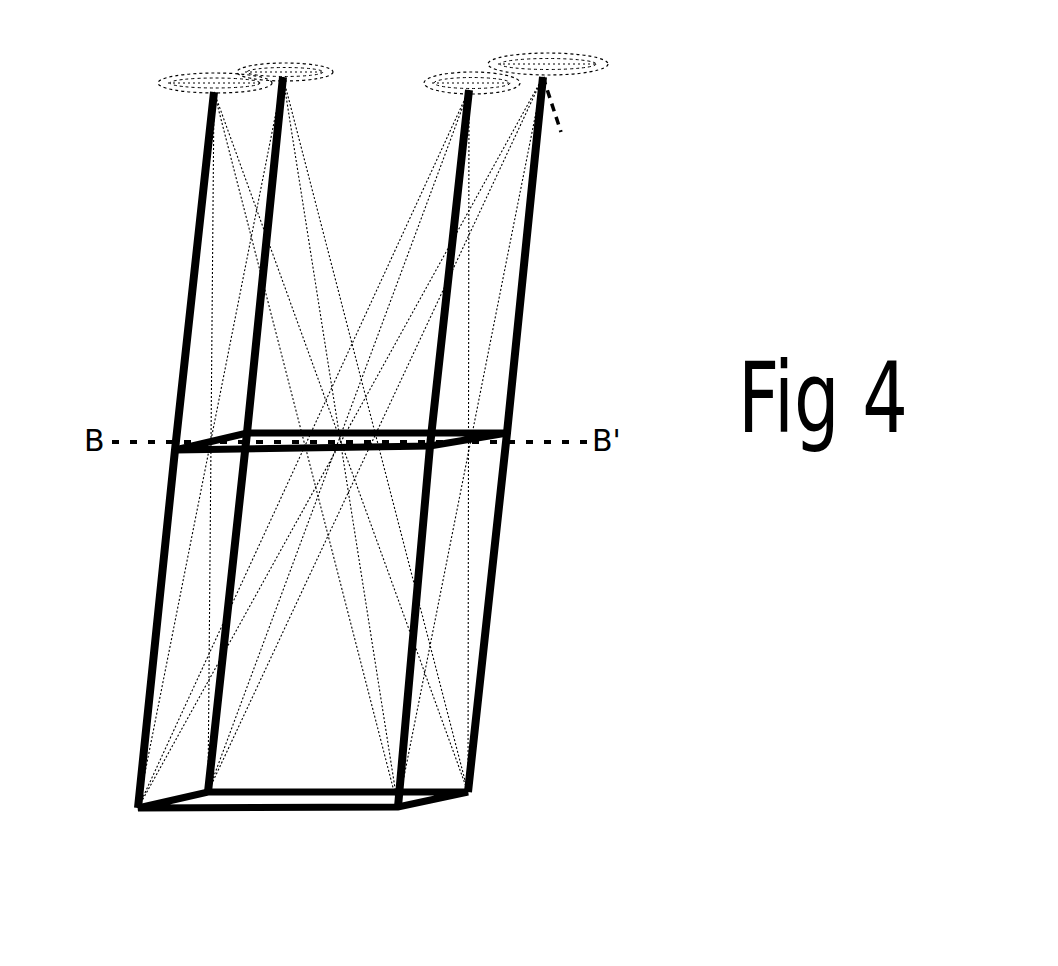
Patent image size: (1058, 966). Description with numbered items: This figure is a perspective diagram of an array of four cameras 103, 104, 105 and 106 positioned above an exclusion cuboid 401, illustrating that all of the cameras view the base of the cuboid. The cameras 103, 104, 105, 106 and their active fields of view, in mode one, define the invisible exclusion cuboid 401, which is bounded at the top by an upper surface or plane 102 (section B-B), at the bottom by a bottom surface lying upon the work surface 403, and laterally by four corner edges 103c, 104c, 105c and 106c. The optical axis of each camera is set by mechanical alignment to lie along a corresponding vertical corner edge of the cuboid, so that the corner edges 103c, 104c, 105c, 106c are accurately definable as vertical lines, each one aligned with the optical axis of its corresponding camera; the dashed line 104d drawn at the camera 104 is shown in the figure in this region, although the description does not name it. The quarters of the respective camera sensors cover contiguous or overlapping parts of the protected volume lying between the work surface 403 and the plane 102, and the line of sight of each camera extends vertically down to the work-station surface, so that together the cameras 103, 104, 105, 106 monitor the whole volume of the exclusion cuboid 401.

The plane 102 is at (237, 422).
The camera 103 is at (300, 60).
The camera 104 is at (606, 68).
The camera 105 is at (422, 84).
The camera 106 is at (192, 88).
The optical axis of camera 104 104d is at (562, 136).
The corner edge 103c is at (238, 507).
The corner edge 104c is at (521, 296).
The corner edge 105c is at (440, 365).
The corner edge 106c is at (152, 633).
The exclusion cuboid 401 is at (339, 475).
The work surface 403 is at (200, 813).